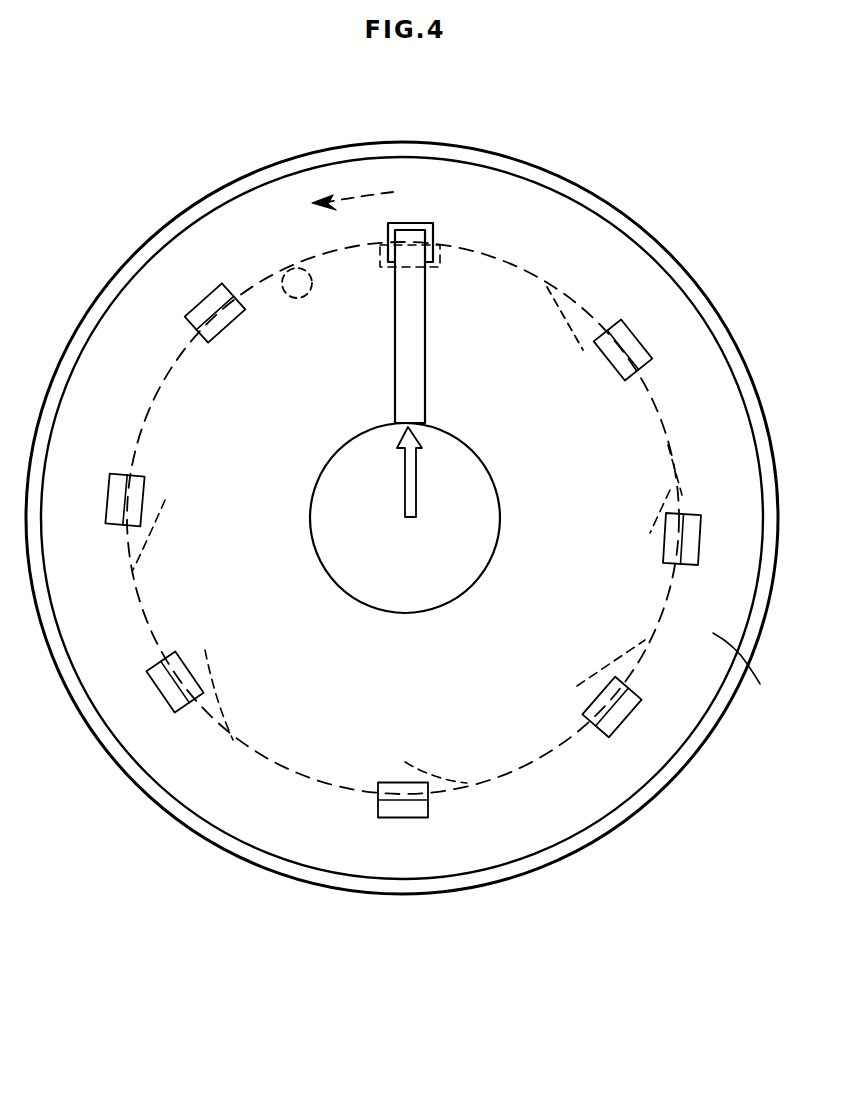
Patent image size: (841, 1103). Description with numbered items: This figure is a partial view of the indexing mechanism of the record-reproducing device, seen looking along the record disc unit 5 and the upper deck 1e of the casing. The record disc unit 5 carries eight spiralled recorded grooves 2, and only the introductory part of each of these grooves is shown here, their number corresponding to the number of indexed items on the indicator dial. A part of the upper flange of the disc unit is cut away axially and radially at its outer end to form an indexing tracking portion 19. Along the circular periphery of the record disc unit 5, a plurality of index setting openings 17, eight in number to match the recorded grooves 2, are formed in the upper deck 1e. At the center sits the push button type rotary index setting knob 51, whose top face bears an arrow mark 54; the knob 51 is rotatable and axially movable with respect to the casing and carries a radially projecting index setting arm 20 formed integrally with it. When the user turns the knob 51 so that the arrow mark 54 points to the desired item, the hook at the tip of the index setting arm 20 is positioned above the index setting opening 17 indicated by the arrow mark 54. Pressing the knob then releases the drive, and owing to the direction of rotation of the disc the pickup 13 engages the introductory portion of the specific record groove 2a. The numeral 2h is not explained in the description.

The recorded grooves 2 is at (402, 488).
The specific record groove 2a is at (352, 262).
The recess 2h is at (567, 293).
The upper deck 1e is at (752, 665).
The record disc unit 5 is at (582, 310).
The pickup 13 is at (291, 268).
The index setting openings 17 is at (210, 305).
The indexing tracking portion 19 is at (443, 262).
The index setting arm 20 is at (395, 348).
The rotary index setting knob 51 is at (333, 573).
The arrow mark 54 is at (413, 477).